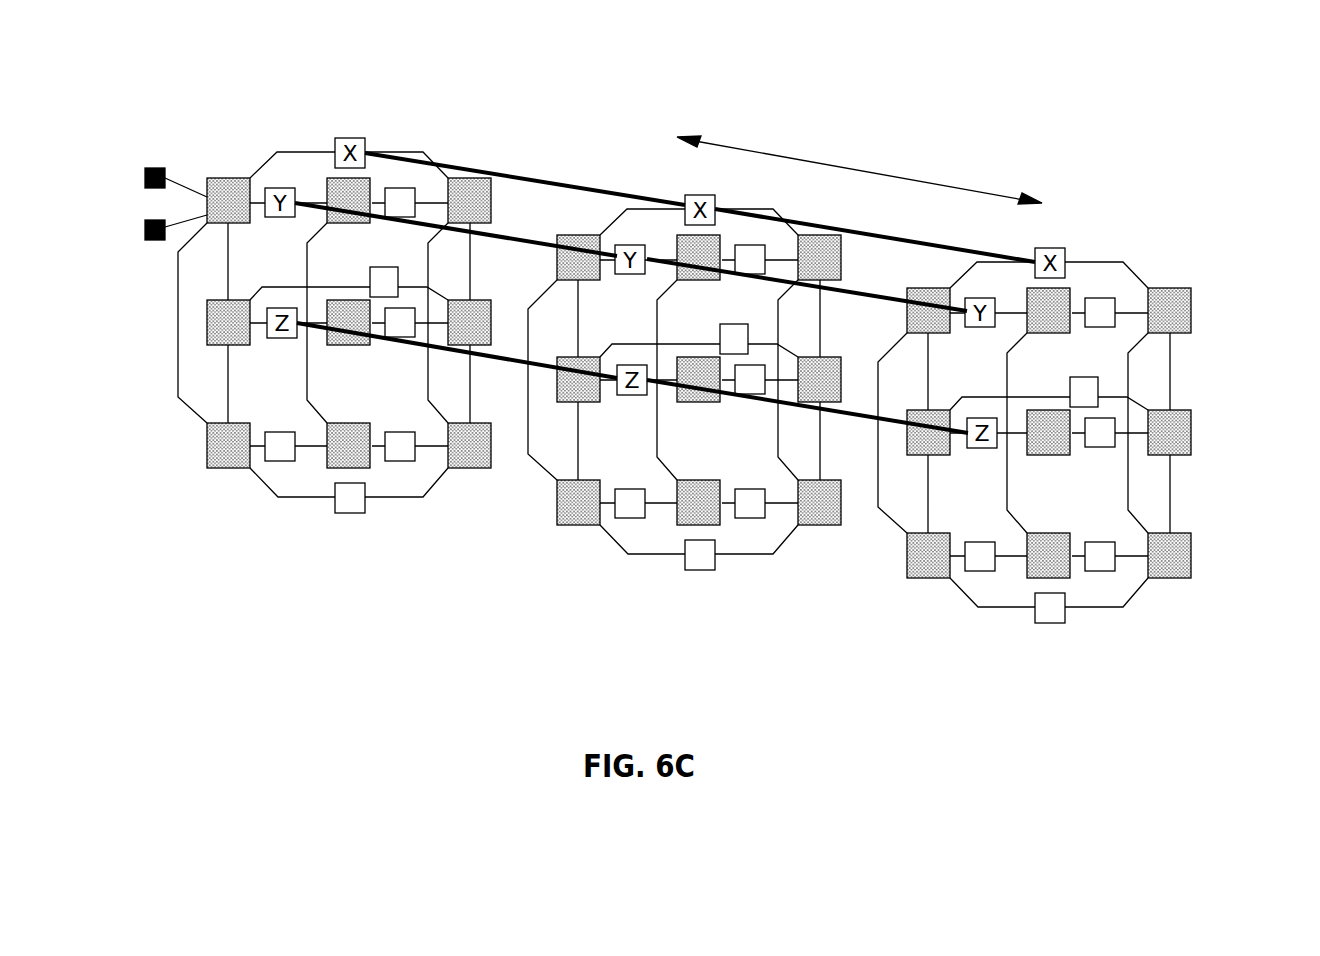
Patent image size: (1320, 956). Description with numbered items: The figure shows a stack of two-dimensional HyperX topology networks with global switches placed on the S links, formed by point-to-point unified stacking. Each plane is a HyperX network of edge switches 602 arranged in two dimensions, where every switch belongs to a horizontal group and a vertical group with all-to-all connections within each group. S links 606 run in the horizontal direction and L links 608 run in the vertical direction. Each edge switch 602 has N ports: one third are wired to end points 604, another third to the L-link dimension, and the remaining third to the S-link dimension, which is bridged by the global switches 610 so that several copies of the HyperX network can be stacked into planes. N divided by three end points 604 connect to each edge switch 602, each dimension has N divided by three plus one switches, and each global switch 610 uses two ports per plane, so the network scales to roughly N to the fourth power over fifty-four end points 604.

The edge switch 602 is at (230, 468).
The end point 604 is at (145, 223).
The S link 606 is at (302, 497).
The L link 608 is at (192, 408).
The global switch 610 is at (400, 460).